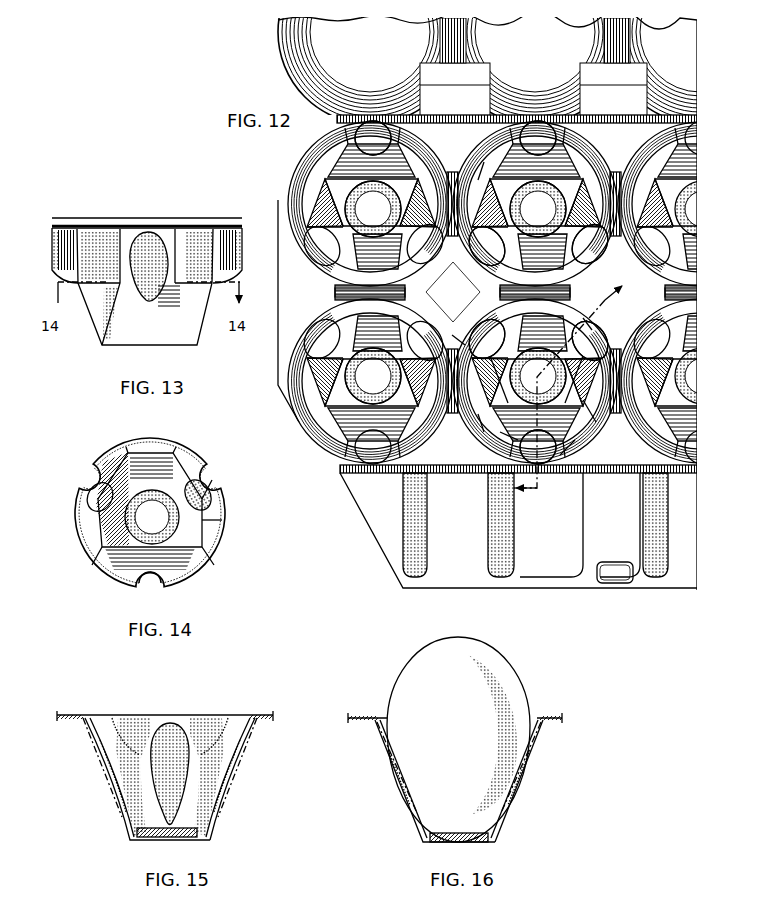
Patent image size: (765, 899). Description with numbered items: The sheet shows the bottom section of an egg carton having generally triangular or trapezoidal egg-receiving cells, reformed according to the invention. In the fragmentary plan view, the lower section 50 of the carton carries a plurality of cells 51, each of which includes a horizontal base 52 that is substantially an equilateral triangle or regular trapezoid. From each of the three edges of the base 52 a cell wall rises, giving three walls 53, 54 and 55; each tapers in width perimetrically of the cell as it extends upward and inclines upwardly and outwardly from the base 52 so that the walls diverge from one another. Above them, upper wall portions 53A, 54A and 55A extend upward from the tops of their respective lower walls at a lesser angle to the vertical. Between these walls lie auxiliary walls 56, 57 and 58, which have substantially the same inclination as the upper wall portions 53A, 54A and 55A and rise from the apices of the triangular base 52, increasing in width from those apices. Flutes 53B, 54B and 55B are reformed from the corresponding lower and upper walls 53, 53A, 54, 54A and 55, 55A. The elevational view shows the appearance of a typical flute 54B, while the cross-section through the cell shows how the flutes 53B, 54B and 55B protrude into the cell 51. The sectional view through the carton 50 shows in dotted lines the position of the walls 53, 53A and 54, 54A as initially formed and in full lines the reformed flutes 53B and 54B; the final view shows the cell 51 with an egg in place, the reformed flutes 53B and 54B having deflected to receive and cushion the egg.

In FIG. 12, the lower section 50 is at (281, 181).
In FIG. 12, the cell 51 is at (300, 202).
In FIG. 13, the cell 51 is at (108, 216).
In FIG. 14, the cell 51 is at (186, 472).
In FIG. 15, the cell 51 is at (105, 730).
In FIG. 16, the cell 51 is at (373, 712).
In FIG. 12, the base 52 is at (663, 396).
In FIG. 14, the base 52 is at (186, 536).
In FIG. 15, the base 52 is at (135, 833).
In FIG. 16, the base 52 is at (426, 840).
In FIG. 12, the wall 53 is at (580, 384).
In FIG. 14, the wall 53 is at (208, 512).
In FIG. 15, the wall 53 is at (218, 812).
In FIG. 16, the wall 53 is at (500, 822).
In FIG. 12, the upper wall portion 53A is at (585, 317).
In FIG. 15, the upper wall portion 53A is at (240, 740).
In FIG. 16, the upper wall portion 53A is at (545, 735).
In FIG. 12, the flute 53B is at (575, 245).
In FIG. 14, the flute 53B is at (210, 489).
In FIG. 15, the flute 53B is at (228, 776).
In FIG. 16, the flute 53B is at (525, 782).
In FIG. 12, the wall 54 is at (509, 435).
In FIG. 13, the wall 54 is at (153, 334).
In FIG. 14, the wall 54 is at (180, 562).
In FIG. 15, the wall 54 is at (122, 812).
In FIG. 16, the wall 54 is at (415, 823).
In FIG. 12, the upper wall portion 54A is at (576, 458).
In FIG. 13, the upper wall portion 54A is at (128, 229).
In FIG. 15, the upper wall portion 54A is at (100, 740).
In FIG. 16, the upper wall portion 54A is at (381, 735).
In FIG. 12, the flute 54B is at (370, 128).
In FIG. 13, the flute 54B is at (155, 238).
In FIG. 14, the flute 54B is at (150, 584).
In FIG. 15, the flute 54B is at (115, 776).
In FIG. 16, the flute 54B is at (396, 776).
In FIG. 12, the wall 55 is at (471, 380).
In FIG. 14, the wall 55 is at (106, 458).
In FIG. 15, the wall 55 is at (168, 726).
In FIG. 12, the upper wall portion 55A is at (458, 333).
In FIG. 12, the flute 55B is at (470, 245).
In FIG. 14, the flute 55B is at (97, 487).
In FIG. 12, the auxiliary wall 56 is at (587, 419).
In FIG. 13, the auxiliary wall 56 is at (200, 229).
In FIG. 14, the auxiliary wall 56 is at (208, 548).
In FIG. 12, the auxiliary wall 57 is at (484, 162).
In FIG. 13, the auxiliary wall 57 is at (96, 229).
In FIG. 14, the auxiliary wall 57 is at (103, 565).
In FIG. 12, the auxiliary wall 58 is at (490, 297).
In FIG. 14, the auxiliary wall 58 is at (130, 447).